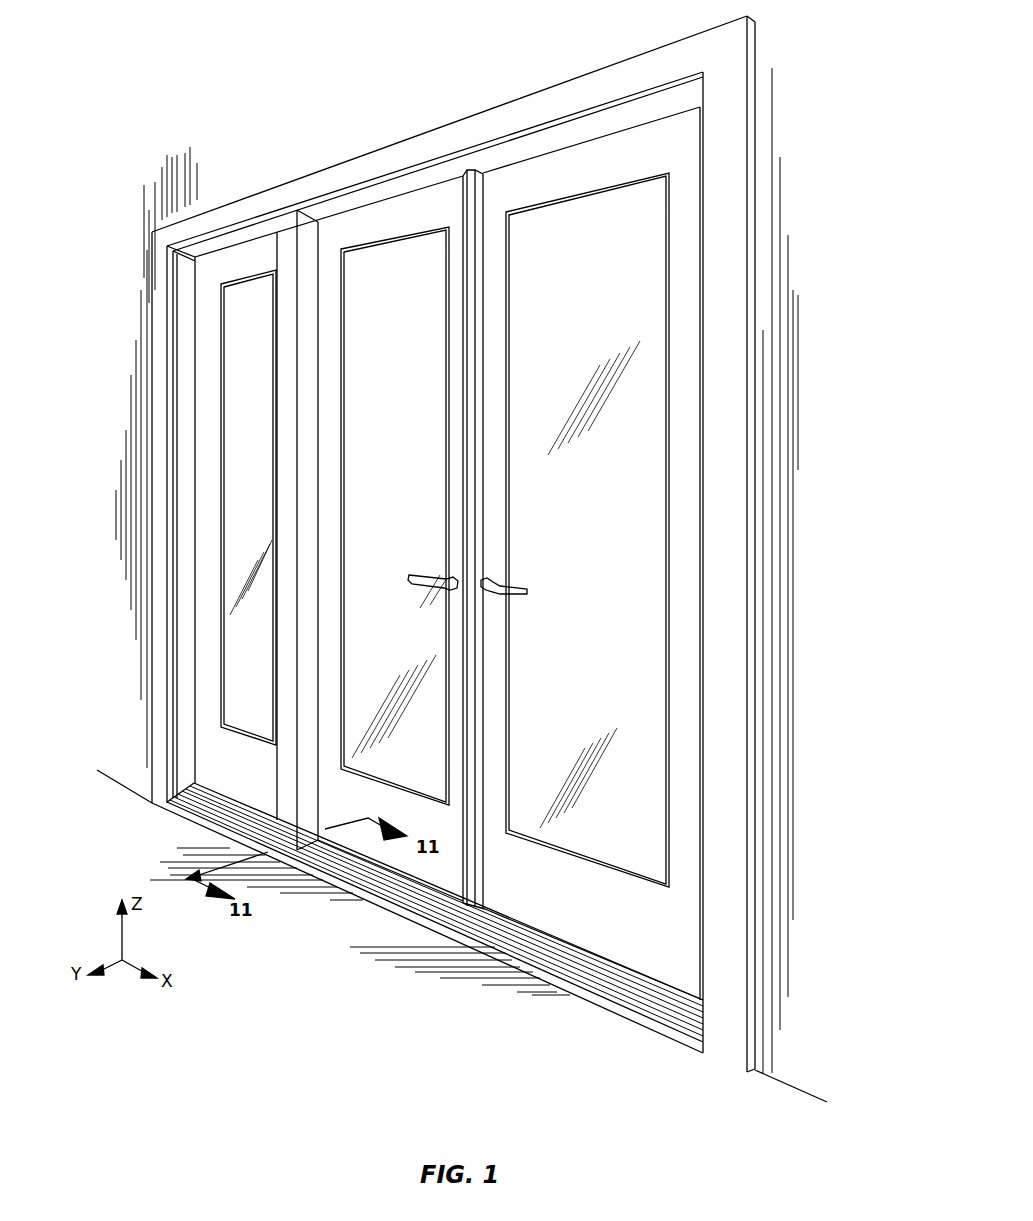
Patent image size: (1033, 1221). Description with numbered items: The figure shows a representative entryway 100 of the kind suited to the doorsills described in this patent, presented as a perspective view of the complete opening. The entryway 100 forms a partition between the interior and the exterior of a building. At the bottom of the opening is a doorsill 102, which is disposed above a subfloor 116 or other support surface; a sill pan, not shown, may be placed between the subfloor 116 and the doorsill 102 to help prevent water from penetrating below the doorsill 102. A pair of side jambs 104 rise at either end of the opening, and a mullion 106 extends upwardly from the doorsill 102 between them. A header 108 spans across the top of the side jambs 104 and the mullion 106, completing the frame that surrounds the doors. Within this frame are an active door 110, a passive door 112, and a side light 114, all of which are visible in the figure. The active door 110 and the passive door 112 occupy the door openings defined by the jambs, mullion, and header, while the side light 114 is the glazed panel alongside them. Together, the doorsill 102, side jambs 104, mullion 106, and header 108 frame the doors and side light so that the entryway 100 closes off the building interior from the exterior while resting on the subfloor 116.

The entryway 100 is at (292, 121).
The doorsill 102 is at (592, 1002).
The side jambs 104 is at (160, 335).
The mullion 106 is at (285, 736).
The header 108 is at (559, 107).
The active door 110 is at (635, 158).
The passive door 112 is at (377, 226).
The side light 114 is at (247, 319).
The subfloor 116 is at (702, 1090).